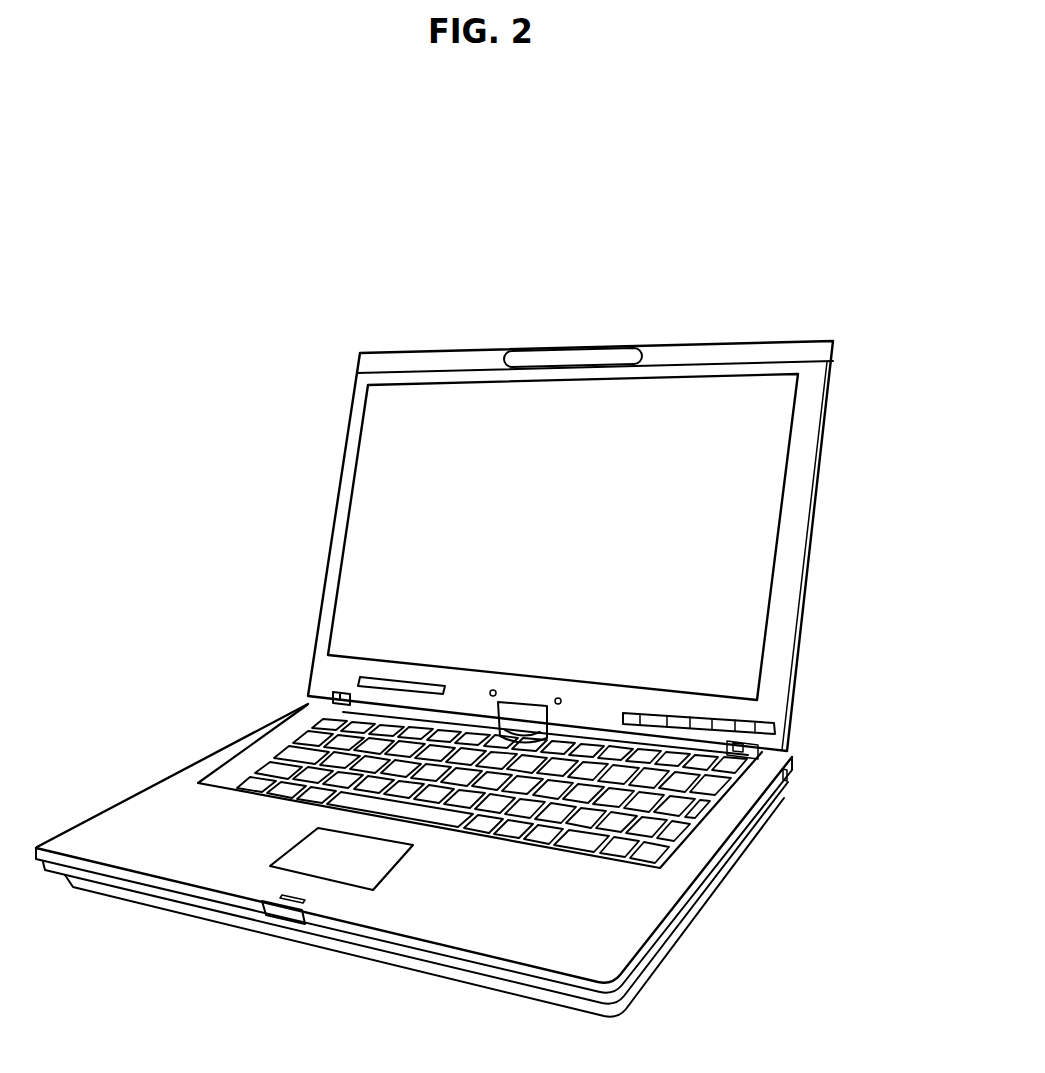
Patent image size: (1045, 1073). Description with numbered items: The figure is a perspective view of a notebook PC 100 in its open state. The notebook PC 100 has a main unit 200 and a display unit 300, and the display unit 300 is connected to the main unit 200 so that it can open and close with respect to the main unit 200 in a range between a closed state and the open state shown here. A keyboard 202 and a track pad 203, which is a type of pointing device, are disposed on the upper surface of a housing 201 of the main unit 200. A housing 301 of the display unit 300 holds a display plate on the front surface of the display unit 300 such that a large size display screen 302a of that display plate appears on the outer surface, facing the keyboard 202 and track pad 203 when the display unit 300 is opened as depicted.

The notebook PC 100 is at (288, 368).
The main unit 200 is at (202, 722).
The housing 201 is at (115, 825).
The keyboard 202 is at (664, 803).
The track pad 203 is at (375, 860).
The display unit 300 is at (505, 328).
The housing 301 is at (830, 388).
The display screen 302a is at (750, 472).